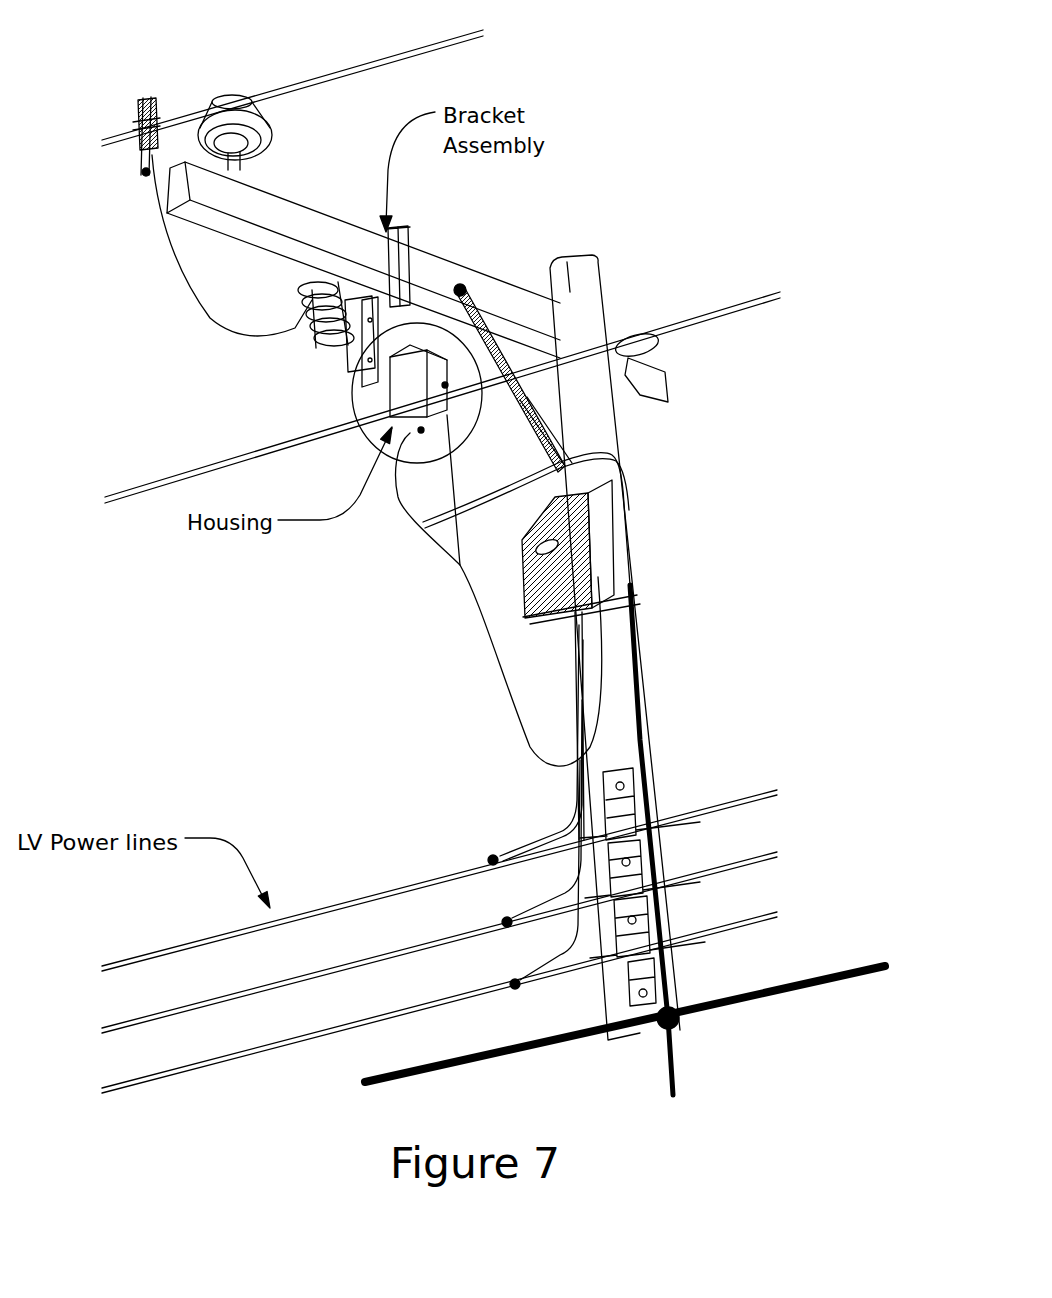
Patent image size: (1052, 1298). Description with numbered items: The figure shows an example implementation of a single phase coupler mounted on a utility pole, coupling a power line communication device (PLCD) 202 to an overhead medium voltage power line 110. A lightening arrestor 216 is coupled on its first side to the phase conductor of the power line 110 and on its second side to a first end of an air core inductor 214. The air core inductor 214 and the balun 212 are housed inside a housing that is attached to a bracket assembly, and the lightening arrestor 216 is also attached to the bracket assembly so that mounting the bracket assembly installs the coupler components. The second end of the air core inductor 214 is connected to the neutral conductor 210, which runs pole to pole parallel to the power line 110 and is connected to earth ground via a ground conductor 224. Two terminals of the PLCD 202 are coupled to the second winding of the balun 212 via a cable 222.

The power line 110 is at (300, 78).
The air core inductor 214 is at (478, 355).
The balun 212 is at (627, 342).
The lightening arrestor 216 is at (308, 331).
The power line communication device 202 is at (630, 598).
The cable 222 is at (470, 633).
The neutral conductor 210 is at (760, 990).
The ground conductor 224 is at (678, 1078).